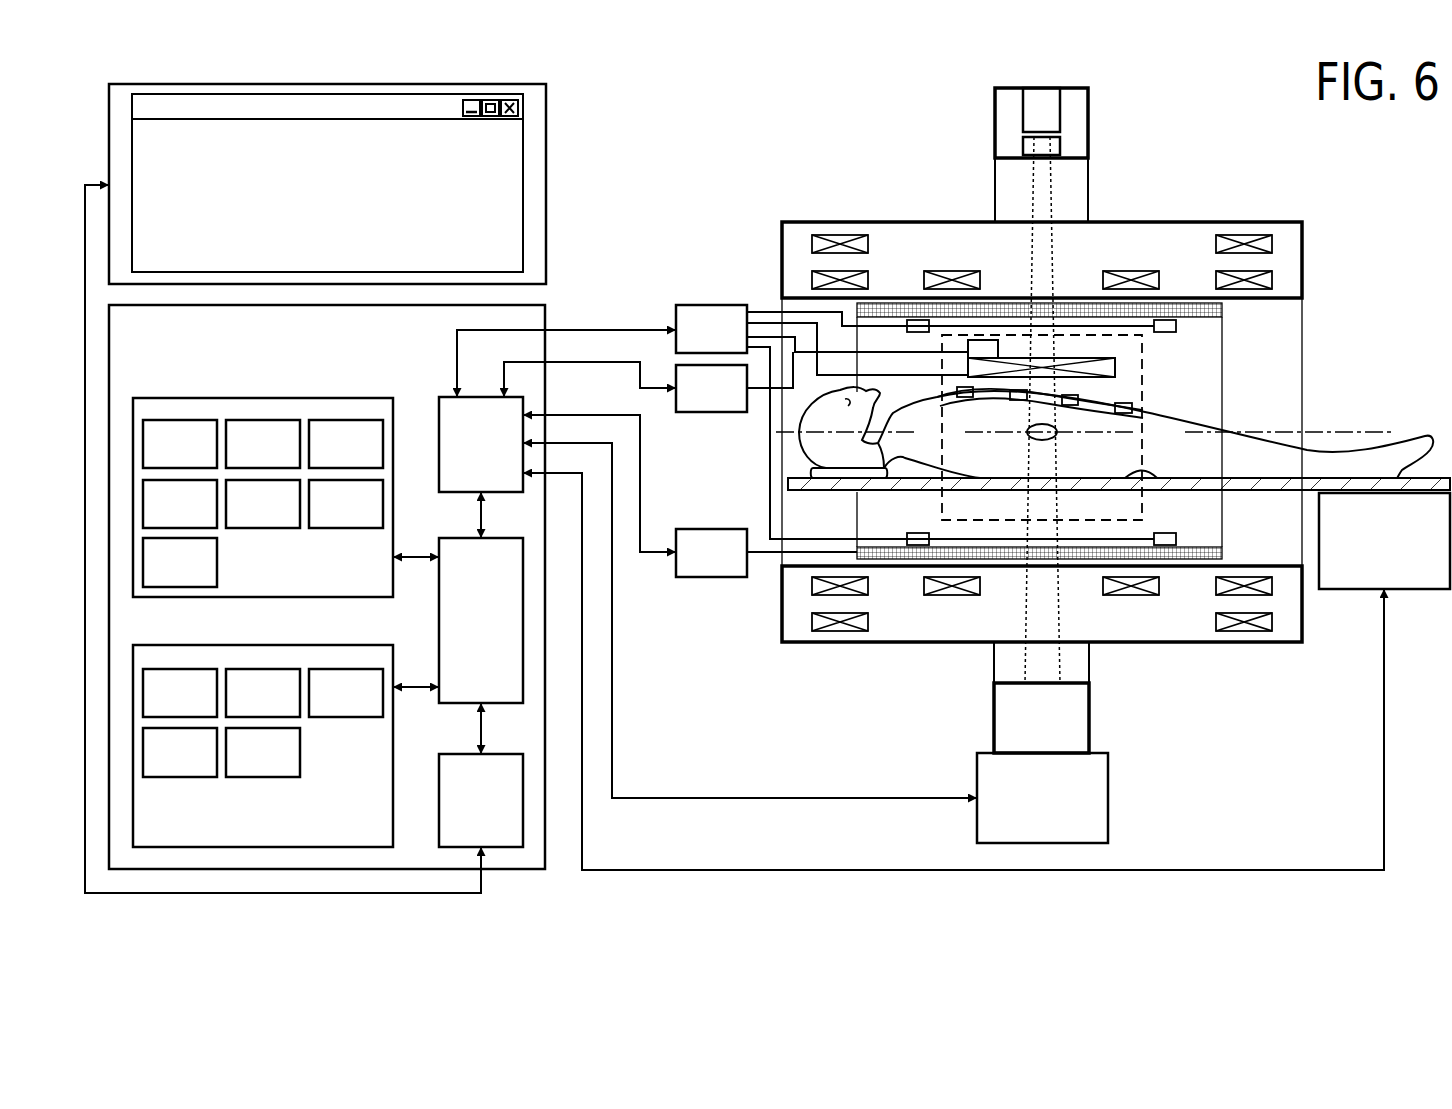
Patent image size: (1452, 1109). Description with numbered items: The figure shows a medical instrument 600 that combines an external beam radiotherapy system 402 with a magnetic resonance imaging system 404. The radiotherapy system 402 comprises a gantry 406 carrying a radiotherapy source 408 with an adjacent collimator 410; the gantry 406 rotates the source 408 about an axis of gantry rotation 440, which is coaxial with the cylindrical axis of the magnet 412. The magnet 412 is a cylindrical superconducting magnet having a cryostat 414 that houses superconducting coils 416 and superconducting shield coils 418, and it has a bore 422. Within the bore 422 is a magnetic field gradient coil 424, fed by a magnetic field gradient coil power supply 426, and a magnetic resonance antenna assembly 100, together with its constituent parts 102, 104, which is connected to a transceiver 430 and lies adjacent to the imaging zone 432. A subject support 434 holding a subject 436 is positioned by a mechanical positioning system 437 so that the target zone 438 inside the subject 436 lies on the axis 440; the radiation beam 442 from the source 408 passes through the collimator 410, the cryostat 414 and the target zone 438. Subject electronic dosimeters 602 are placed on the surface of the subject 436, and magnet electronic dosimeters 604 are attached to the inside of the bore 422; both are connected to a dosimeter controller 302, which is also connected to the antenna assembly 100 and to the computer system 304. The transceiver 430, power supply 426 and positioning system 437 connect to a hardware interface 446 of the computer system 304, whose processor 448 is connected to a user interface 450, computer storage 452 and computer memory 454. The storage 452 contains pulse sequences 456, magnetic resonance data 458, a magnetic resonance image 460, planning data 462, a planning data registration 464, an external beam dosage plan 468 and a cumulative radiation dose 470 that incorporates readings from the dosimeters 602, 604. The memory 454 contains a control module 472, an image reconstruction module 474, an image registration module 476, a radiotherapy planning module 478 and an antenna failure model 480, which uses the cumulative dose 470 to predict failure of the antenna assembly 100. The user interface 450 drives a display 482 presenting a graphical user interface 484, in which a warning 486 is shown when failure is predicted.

The magnetic resonance antenna assembly 100 is at (1120, 337).
The coil connector 102 is at (1107, 370).
The strap 104 is at (940, 398).
The dosimeter controller 302 is at (733, 344).
The computer system 304 is at (203, 344).
The external beam radiotherapy system 402 is at (1100, 105).
The magnetic resonance imaging system 404 is at (768, 215).
The gantry 406 is at (1017, 667).
The radiotherapy source 408 is at (1037, 110).
The collimator 410 is at (1037, 147).
The magnet 412 is at (1302, 285).
The cryostat 414 is at (1290, 235).
The superconducting coils 416 is at (955, 271).
The superconducting shield coils 418 is at (843, 235).
The bore 422 is at (1262, 336).
The magnetic field gradient coil 424 is at (1007, 310).
The magnetic field gradient coil power supply 426 is at (733, 567).
The transceiver 430 is at (733, 403).
The imaging zone 432 is at (942, 505).
The subject support 434 is at (820, 488).
The subject 436 is at (810, 446).
The mechanical positioning system 437 is at (1413, 580).
The target zone 438 is at (1052, 437).
The axis of gantry rotation 440 is at (1370, 430).
The radiation beam 442 is at (1035, 268).
The hardware interface 446 is at (503, 459).
The processor 448 is at (503, 637).
The user interface 450 is at (503, 814).
The computer storage 452 is at (367, 577).
The computer memory 454 is at (367, 826).
The pulse sequences 456 is at (203, 459).
The magnetic resonance data 458 is at (286, 459).
The magnetic resonance image 460 is at (369, 459).
The planning data 462 is at (203, 519).
The planning data registration 464 is at (286, 519).
The external beam dosage plan 468 is at (369, 519).
The cumulative radiation dose 470 is at (203, 578).
The control module 472 is at (203, 708).
The image reconstruction module 474 is at (286, 708).
The image registration module 476 is at (369, 708).
The radiotherapy planning module 478 is at (203, 768).
The antenna failure model 480 is at (286, 768).
The display 482 is at (547, 118).
The graphical user interface 484 is at (523, 222).
The warning 486 is at (439, 133).
The medical instrument 600 is at (790, 155).
The subject electronic dosimeters 602 is at (1020, 400).
The magnet electronic dosimeters 604 is at (913, 320).